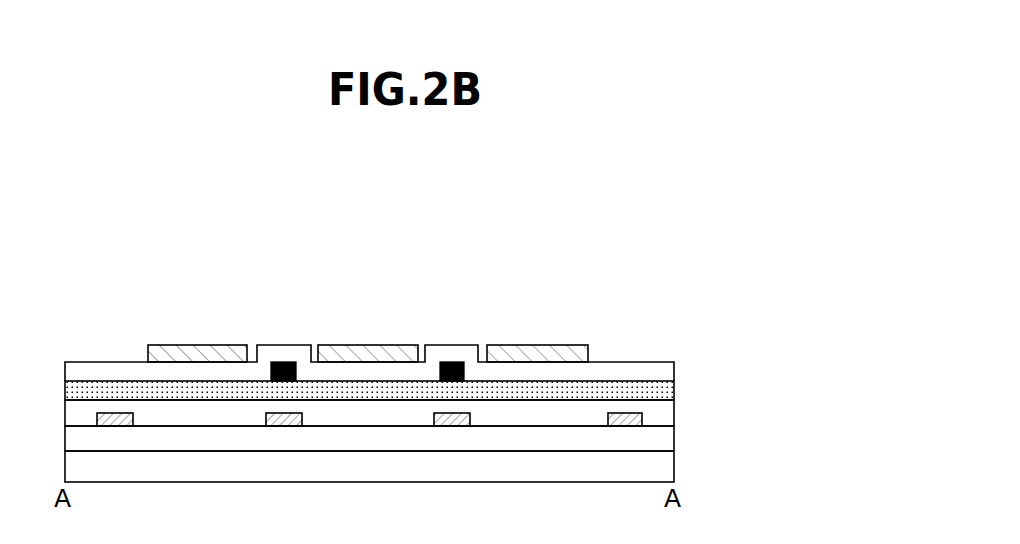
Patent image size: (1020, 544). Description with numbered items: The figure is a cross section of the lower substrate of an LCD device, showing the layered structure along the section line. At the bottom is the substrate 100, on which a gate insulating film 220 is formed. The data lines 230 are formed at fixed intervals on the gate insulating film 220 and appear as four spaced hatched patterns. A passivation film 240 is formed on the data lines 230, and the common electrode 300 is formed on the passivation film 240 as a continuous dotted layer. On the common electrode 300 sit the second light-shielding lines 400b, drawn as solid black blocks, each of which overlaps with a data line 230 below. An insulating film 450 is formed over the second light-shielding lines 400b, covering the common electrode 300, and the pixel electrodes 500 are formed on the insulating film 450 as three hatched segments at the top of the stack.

The substrate 100 is at (667, 465).
The gate insulating film 220 is at (667, 443).
The passivation film 240 is at (667, 407).
The data lines 230 is at (634, 421).
The common electrode 300 is at (667, 385).
The insulating film 450 is at (667, 365).
The second light-shielding line 400b is at (285, 362).
The pixel electrode 500 is at (199, 353).